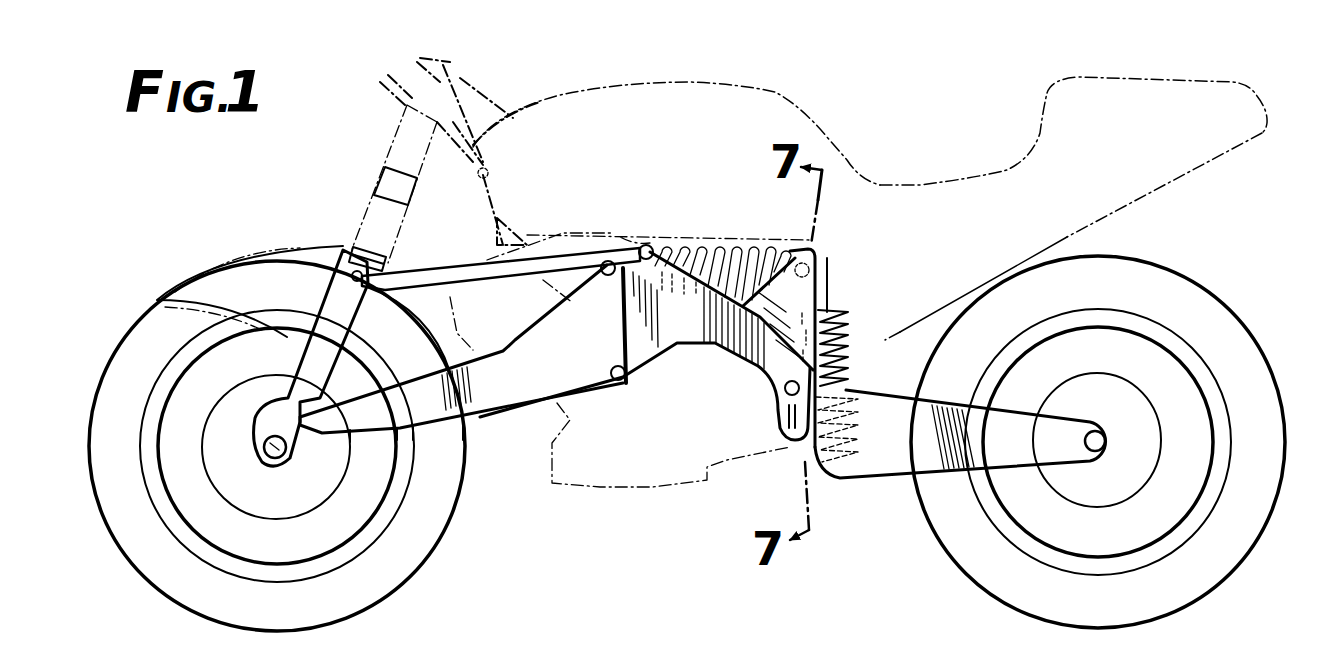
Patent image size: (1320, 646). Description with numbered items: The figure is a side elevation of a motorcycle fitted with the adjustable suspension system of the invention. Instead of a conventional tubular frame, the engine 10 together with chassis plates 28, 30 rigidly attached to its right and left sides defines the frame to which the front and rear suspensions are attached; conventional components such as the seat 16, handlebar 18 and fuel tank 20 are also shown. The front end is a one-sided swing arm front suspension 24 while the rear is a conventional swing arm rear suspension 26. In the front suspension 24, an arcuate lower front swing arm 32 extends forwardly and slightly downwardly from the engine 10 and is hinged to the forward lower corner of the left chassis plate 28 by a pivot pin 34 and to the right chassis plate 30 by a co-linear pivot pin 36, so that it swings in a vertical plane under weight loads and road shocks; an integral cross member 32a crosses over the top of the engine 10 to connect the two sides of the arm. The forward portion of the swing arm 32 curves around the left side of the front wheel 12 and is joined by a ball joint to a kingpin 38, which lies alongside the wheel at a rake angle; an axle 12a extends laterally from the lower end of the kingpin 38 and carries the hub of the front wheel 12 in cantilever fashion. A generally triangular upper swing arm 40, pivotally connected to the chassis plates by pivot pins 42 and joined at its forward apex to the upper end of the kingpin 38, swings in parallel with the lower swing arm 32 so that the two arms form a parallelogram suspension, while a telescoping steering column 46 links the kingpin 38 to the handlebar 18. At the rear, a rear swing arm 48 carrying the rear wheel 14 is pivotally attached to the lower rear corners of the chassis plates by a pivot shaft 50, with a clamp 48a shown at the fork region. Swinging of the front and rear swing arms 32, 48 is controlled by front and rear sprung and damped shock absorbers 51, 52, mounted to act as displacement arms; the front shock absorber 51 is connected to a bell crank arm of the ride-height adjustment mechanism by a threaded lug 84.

The engine 10 is at (655, 490).
The front wheel 12 is at (138, 566).
The axle 12a is at (287, 458).
The rear wheel 14 is at (1208, 597).
The seat 16 is at (918, 170).
The handlebar 18 is at (388, 103).
The fuel tank 20 is at (727, 73).
The one-sided swing arm front suspension 24 is at (525, 418).
The swing arm rear suspension 26 is at (840, 512).
The left chassis plate 28 is at (762, 355).
The right chassis plate 30 is at (788, 641).
The lower front swing arm 32 is at (494, 402).
The cross member 32a is at (570, 303).
The pivot pin 34 is at (620, 383).
The pivot pin 36 is at (625, 645).
The kingpin 38 is at (320, 310).
The upper swing arm 40 is at (450, 262).
The pivot pins 42 is at (642, 246).
The telescoping steering column 46 is at (377, 185).
The rear swing arm 48 is at (905, 462).
The fork clamp 48a is at (347, 250).
The pivot shaft 50 is at (768, 417).
The front shock absorber 51 is at (735, 252).
The rear shock absorber 52 is at (862, 344).
The threaded lug 84 is at (833, 270).